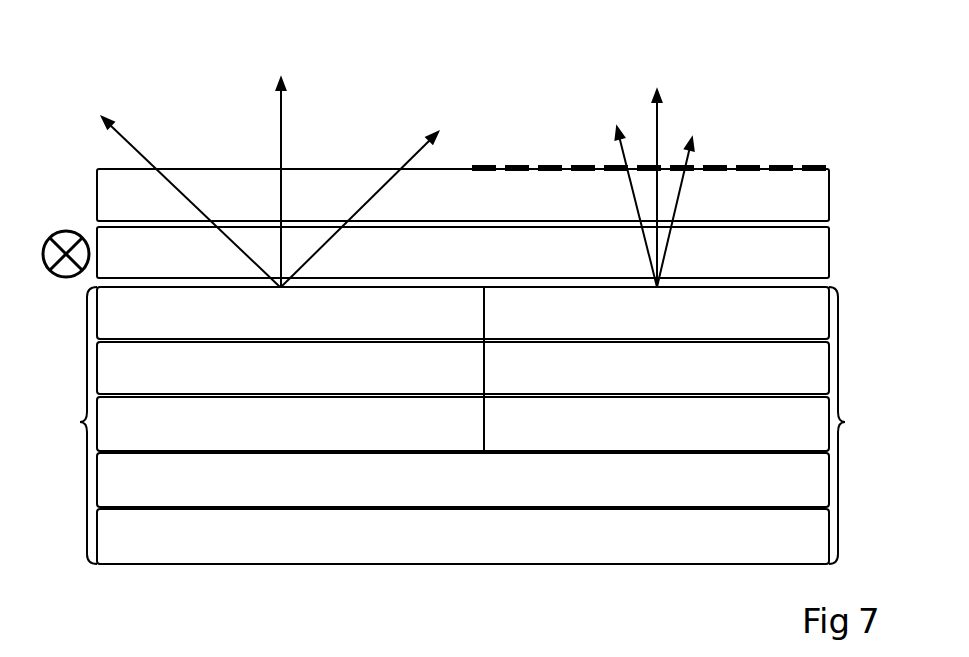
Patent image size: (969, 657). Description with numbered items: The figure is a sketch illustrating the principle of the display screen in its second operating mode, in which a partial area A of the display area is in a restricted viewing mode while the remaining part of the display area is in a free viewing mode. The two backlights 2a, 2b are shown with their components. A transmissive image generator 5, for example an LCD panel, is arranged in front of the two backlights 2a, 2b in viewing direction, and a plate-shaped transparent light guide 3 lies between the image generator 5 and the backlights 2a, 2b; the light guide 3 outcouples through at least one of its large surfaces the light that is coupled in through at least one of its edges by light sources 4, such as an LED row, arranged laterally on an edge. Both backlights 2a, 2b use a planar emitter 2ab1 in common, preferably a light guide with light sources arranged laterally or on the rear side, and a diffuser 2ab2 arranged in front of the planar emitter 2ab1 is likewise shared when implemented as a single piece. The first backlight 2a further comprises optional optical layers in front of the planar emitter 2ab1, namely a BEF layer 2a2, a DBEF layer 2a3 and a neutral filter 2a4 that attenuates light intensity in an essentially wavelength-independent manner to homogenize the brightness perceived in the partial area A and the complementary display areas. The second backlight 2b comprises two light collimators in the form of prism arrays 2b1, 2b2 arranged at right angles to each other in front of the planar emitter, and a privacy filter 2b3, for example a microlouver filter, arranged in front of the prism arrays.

The partial area of the display area A is at (573, 165).
The light sources 4 is at (67, 222).
The transmissive image generator 5 is at (463, 195).
The plate-shaped transparent light guide 3 is at (463, 252).
The first backlight 2a is at (71, 425).
The second backlight 2b is at (855, 425).
The neutral filter 2a4 is at (290, 313).
The DBEF layer 2a3 is at (290, 368).
The BEF layer 2a2 is at (290, 424).
The privacy filter 2b3 is at (656, 313).
The prism array 2b2 is at (656, 368).
The prism array 2b1 is at (656, 424).
The diffuser 2ab2 is at (463, 480).
The planar emitter 2ab1 is at (463, 536).